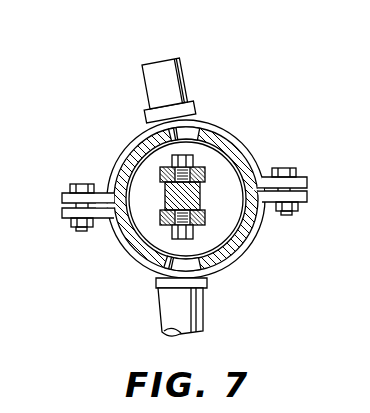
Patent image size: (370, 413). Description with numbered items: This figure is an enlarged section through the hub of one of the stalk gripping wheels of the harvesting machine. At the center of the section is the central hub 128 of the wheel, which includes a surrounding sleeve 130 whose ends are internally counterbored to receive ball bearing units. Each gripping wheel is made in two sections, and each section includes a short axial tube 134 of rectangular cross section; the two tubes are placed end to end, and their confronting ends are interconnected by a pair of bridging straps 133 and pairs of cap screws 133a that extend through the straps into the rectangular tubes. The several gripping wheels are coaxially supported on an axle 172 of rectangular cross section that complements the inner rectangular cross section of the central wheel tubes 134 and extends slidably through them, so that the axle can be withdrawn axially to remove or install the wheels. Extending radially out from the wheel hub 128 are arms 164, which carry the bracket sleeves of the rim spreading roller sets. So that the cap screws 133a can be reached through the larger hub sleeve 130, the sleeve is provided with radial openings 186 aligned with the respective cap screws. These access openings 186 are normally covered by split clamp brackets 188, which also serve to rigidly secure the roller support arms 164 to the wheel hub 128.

The central hub 128 is at (210, 175).
The sleeve 130 is at (112, 231).
The bridging straps 133 is at (161, 170).
The cap screws 133a is at (174, 156).
The short axial tube 134 is at (203, 211).
The hub arm 164 is at (185, 73).
The axle 172 is at (247, 153).
The radial openings 186 is at (190, 130).
The split clamp brackets 188 is at (258, 169).